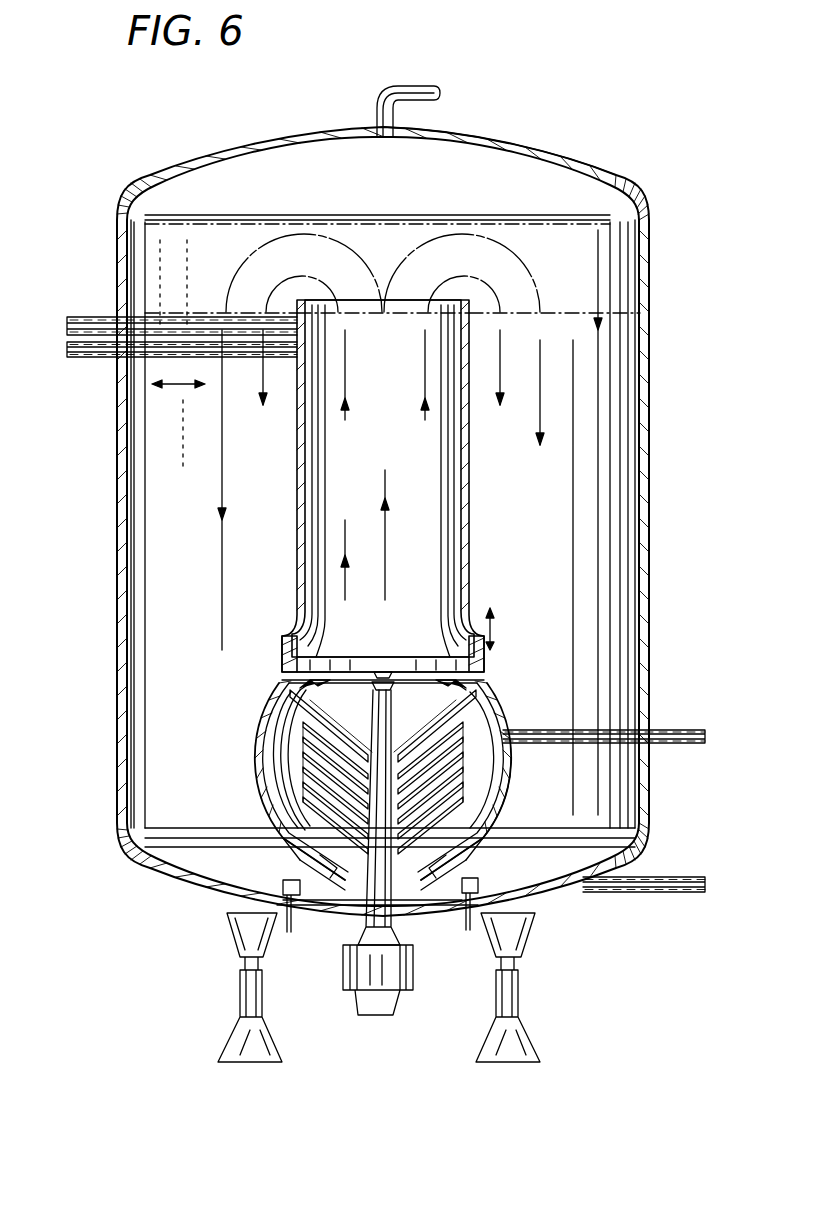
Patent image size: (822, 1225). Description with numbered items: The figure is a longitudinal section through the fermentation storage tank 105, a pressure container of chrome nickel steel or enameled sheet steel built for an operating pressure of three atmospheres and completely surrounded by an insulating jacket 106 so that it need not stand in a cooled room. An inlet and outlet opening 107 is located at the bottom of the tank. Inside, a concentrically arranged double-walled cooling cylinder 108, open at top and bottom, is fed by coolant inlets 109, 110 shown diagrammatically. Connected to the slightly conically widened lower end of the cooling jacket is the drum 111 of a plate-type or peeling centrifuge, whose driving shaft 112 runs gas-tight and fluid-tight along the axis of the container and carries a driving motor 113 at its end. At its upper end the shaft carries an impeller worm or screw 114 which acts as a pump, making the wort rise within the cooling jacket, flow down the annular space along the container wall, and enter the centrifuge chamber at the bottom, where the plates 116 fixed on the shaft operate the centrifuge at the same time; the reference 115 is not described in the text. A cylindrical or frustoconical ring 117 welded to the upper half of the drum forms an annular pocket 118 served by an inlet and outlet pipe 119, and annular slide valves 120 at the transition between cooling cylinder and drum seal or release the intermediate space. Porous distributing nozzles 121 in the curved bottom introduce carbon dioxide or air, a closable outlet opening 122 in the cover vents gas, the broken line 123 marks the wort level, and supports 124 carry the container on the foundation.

The fermentation storage tank 105 is at (668, 606).
The insulating jacket 106 is at (512, 141).
The inlet and outlet opening 107 is at (686, 877).
The double-walled cooling cylinder 108 is at (470, 547).
The coolant inlet 109 is at (84, 359).
The coolant inlet 110 is at (82, 317).
The drum 111 is at (255, 800).
The driving shaft 112 is at (395, 918).
The driving motor 113 is at (397, 1013).
The impeller worm or screw 114 is at (380, 672).
The chamber bottom 115 is at (340, 872).
The plates 116 is at (452, 812).
The ring 117 is at (497, 792).
The annular pocket 118 is at (494, 714).
The inlet and outlet pipe 119 is at (698, 718).
The annular slide valves 120 is at (282, 647).
The porous distributing nozzles 121 is at (480, 889).
The closable outlet opening 122 is at (380, 106).
The level of the wort 123 is at (640, 313).
The supports 124 is at (240, 1001).